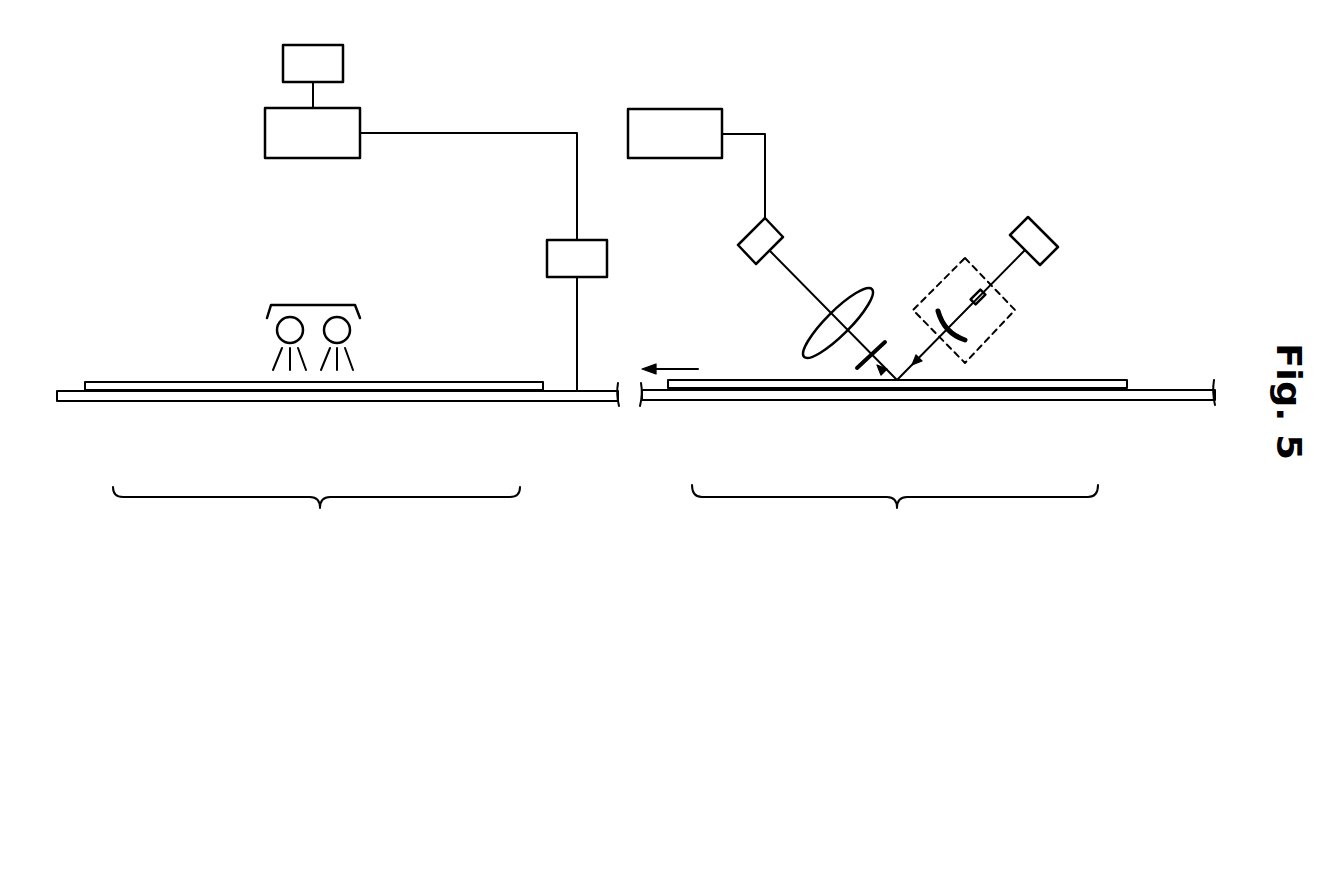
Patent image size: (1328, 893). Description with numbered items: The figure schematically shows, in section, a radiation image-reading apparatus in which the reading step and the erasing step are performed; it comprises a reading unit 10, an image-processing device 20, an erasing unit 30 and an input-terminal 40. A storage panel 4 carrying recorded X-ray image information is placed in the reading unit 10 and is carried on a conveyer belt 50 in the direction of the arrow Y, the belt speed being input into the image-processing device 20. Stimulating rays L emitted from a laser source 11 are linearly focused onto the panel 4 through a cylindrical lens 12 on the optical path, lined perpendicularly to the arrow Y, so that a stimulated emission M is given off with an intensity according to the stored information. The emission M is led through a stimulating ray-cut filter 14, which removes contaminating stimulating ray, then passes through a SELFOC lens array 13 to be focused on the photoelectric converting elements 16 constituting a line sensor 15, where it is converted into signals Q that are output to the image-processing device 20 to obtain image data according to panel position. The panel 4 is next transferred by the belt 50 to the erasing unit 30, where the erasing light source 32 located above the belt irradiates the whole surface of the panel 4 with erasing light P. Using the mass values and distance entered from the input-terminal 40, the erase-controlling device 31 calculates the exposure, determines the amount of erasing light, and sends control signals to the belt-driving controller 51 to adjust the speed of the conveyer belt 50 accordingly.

The storage panel 4 is at (110, 382).
The reading unit 10 is at (895, 520).
The laser source 11 is at (1058, 241).
The cylindrical lens 12 is at (1015, 306).
The SELFOC lens array 13 is at (868, 289).
The stimulating ray-cut filter 14 is at (858, 368).
The line sensor 15 is at (740, 246).
The photoelectric converting elements 16 is at (781, 233).
The image-processing device 20 is at (680, 108).
The erasing unit 30 is at (316, 520).
The erase-controlling device 31 is at (265, 133).
The light source array 32 is at (270, 312).
The input-terminal 40 is at (283, 66).
The conveyer belt 50 is at (65, 401).
The belt-driving controller 51 is at (547, 260).
The stimulating rays L is at (930, 355).
The stimulated emission M is at (853, 348).
The erasing light P is at (273, 360).
The signals Q is at (765, 155).
The arrow indicating transferring direction Y is at (675, 368).